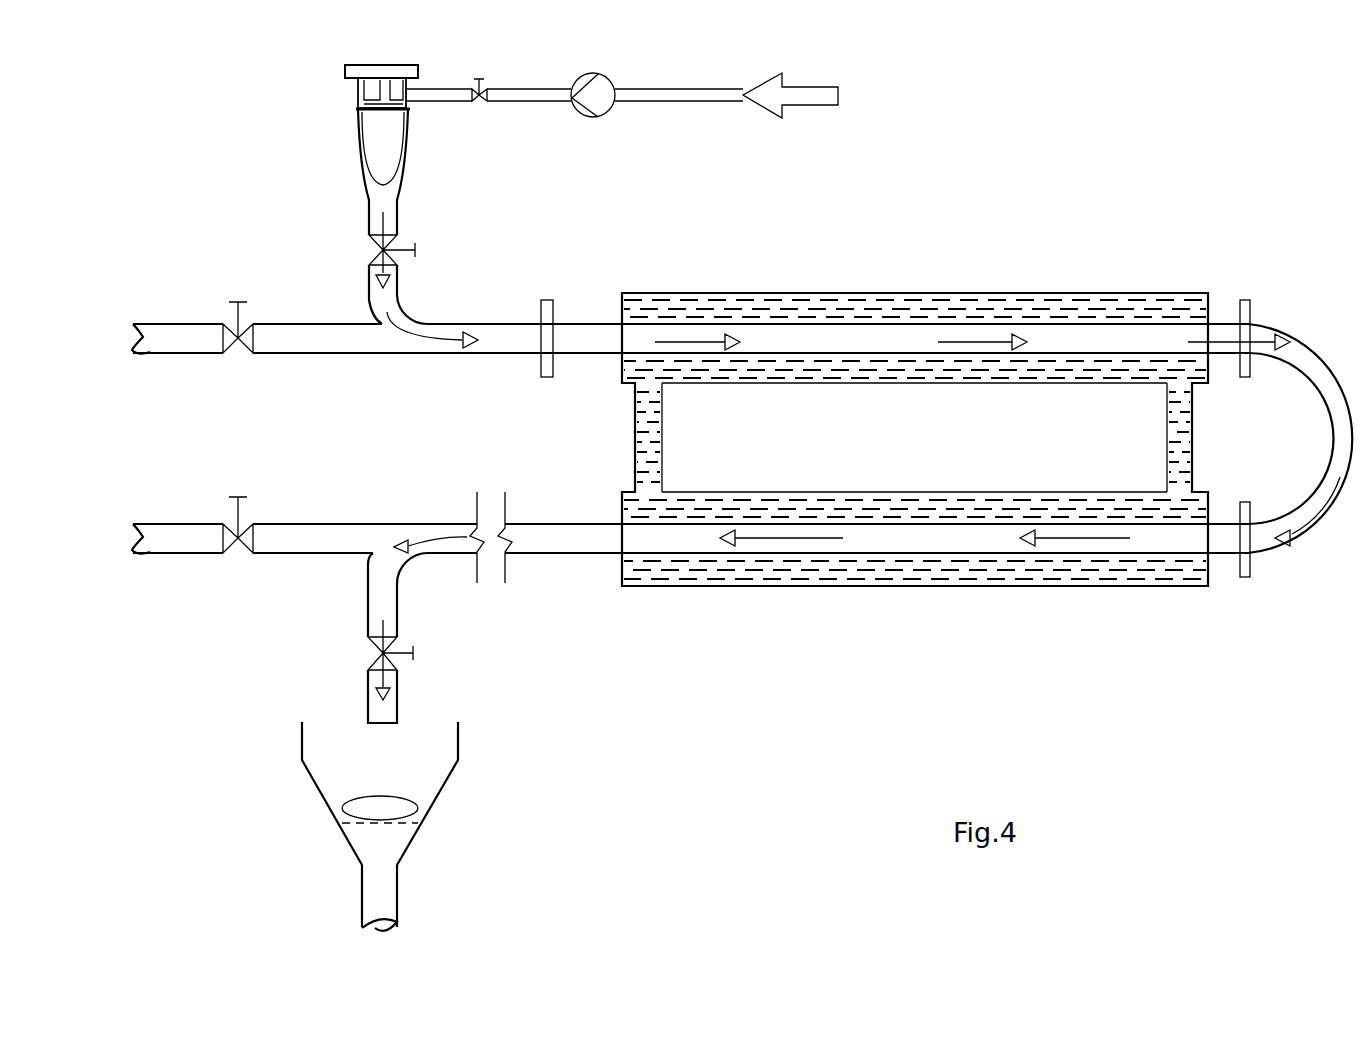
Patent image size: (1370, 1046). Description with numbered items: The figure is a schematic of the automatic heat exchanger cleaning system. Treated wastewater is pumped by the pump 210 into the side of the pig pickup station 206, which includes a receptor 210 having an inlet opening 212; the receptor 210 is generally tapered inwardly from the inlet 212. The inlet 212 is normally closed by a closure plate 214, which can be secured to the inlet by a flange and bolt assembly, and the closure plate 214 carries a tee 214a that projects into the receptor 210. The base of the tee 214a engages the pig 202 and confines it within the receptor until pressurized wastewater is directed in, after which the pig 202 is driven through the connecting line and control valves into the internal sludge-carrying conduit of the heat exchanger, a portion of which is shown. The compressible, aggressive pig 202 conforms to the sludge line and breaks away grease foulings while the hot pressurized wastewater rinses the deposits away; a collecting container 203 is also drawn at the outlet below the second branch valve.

The pig 202 is at (393, 155).
The collection container 203 is at (447, 782).
The pig pickup station 206 is at (345, 168).
The receptor 210 is at (357, 100).
The inlet opening 212 is at (363, 88).
The closure plate 214 is at (412, 72).
The tee 214a is at (405, 95).